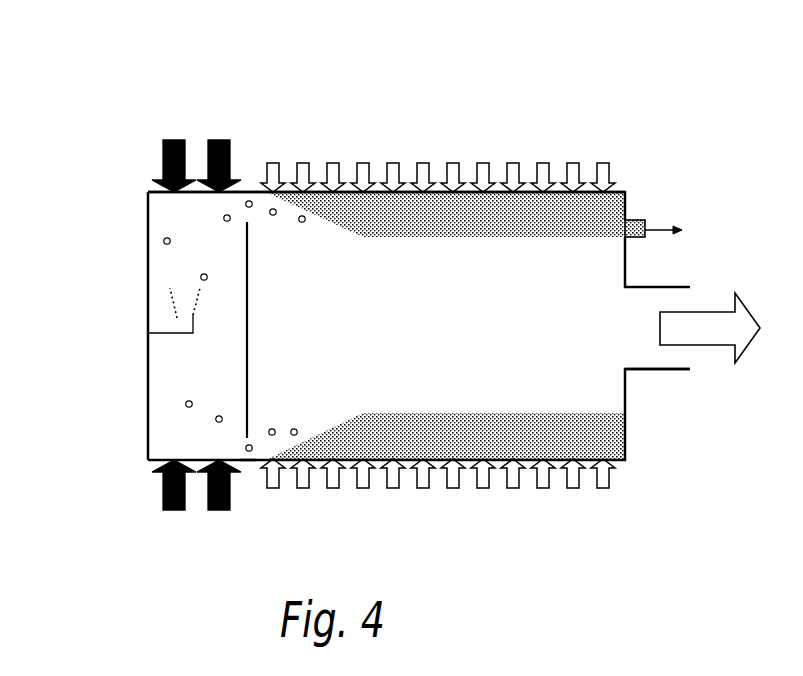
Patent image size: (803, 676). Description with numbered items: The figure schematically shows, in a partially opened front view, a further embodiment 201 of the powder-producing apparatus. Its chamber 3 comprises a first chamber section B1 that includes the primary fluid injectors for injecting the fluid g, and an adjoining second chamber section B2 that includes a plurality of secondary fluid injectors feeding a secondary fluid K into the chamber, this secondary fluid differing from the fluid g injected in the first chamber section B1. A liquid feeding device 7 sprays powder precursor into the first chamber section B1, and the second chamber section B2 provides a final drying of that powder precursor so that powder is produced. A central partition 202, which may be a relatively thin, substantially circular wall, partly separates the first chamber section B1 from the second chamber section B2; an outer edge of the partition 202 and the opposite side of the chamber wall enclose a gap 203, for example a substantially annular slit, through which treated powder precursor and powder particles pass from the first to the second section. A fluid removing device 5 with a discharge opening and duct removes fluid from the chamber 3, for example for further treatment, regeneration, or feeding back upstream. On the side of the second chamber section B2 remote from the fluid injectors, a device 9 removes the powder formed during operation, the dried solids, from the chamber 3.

The apparatus embodiment 201 is at (140, 113).
The partition 202 is at (252, 322).
The gap 203 is at (243, 460).
The chamber 3 is at (146, 463).
The fluid removing device 5 is at (657, 372).
The liquid feeding device 7 is at (177, 318).
The powder removing device 9 is at (634, 208).
The first chamber section B1 is at (241, 146).
The second chamber section B2 is at (436, 125).
The secondary fluid K is at (480, 163).
The fluid g is at (196, 335).